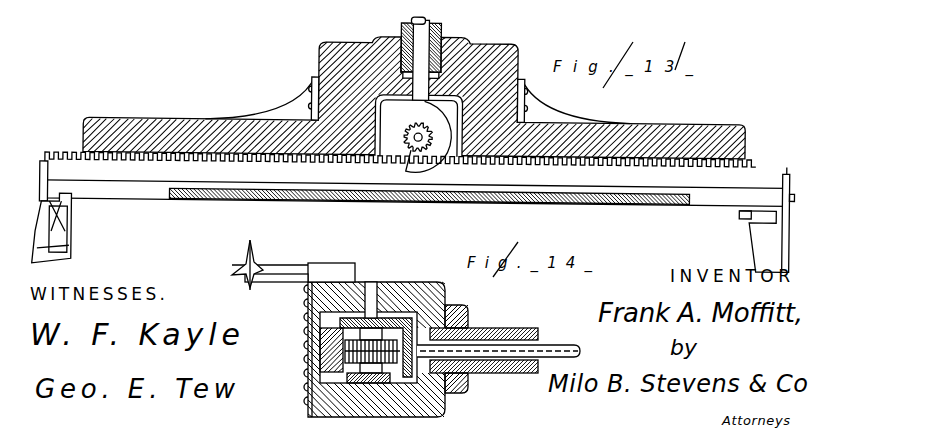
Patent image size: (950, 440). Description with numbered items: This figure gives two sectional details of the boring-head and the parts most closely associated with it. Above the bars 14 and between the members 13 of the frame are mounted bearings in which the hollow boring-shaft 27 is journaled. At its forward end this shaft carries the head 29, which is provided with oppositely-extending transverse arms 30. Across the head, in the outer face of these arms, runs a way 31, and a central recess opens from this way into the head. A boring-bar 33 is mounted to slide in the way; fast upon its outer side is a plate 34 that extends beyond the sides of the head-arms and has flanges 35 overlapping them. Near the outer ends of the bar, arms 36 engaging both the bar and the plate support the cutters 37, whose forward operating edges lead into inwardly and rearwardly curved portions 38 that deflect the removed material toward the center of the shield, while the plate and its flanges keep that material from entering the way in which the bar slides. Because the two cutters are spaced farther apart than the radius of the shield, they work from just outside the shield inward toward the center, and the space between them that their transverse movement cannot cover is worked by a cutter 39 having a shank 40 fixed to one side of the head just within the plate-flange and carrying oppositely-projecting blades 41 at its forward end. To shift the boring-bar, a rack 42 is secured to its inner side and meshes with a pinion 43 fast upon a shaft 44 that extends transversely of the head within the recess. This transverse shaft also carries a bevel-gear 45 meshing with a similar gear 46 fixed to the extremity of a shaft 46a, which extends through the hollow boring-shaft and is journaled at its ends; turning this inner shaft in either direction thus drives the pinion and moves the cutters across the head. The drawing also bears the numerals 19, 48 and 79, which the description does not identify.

In FIG. 14, the members 13 is at (583, 352).
In FIG. 13, the bars 14 is at (452, 1).
In FIG. 14, the bars 14 is at (431, 238).
In FIG. 14, the serrated edge 19 is at (316, 337).
In FIG. 13, the hollow boring-shaft 27 is at (437, 33).
In FIG. 14, the hollow boring-shaft 27 is at (503, 333).
In FIG. 13, the head 29 is at (357, 74).
In FIG. 14, the head 29 is at (446, 408).
In FIG. 13, the transverse arms 30 is at (724, 126).
In FIG. 14, the transverse arms 30 is at (310, 416).
In FIG. 13, the way 31 is at (415, 179).
In FIG. 13, the boring-bar 33 is at (140, 128).
In FIG. 13, the plate 34 is at (578, 202).
In FIG. 14, the plate 34 is at (316, 360).
In FIG. 13, the flanges 35 is at (788, 222).
In FIG. 13, the arms 36 is at (72, 243).
In FIG. 13, the cutters 37 is at (57, 250).
In FIG. 13, the curved portions 38 is at (78, 210).
In FIG. 14, the curved portions 38 is at (327, 276).
In FIG. 14, the cutter 39 is at (254, 258).
In FIG. 14, the shank 40 is at (290, 267).
In FIG. 14, the blades 41 is at (235, 268).
In FIG. 13, the rack 42 is at (450, 129).
In FIG. 14, the rack 42 is at (349, 383).
In FIG. 13, the pinion 43 is at (400, 129).
In FIG. 13, the shaft 44 is at (432, 170).
In FIG. 14, the shaft 44 is at (373, 283).
In FIG. 14, the bevel-gear 45 is at (406, 317).
In FIG. 14, the gear 46 is at (447, 303).
In FIG. 13, the shaft 46a is at (414, 21).
In FIG. 14, the shaft 46a is at (549, 346).
In FIG. 13, the cam 48 is at (455, 99).
In FIG. 14, the cam 48 is at (405, 380).
In FIG. 13, the section line 79 is at (463, 0).